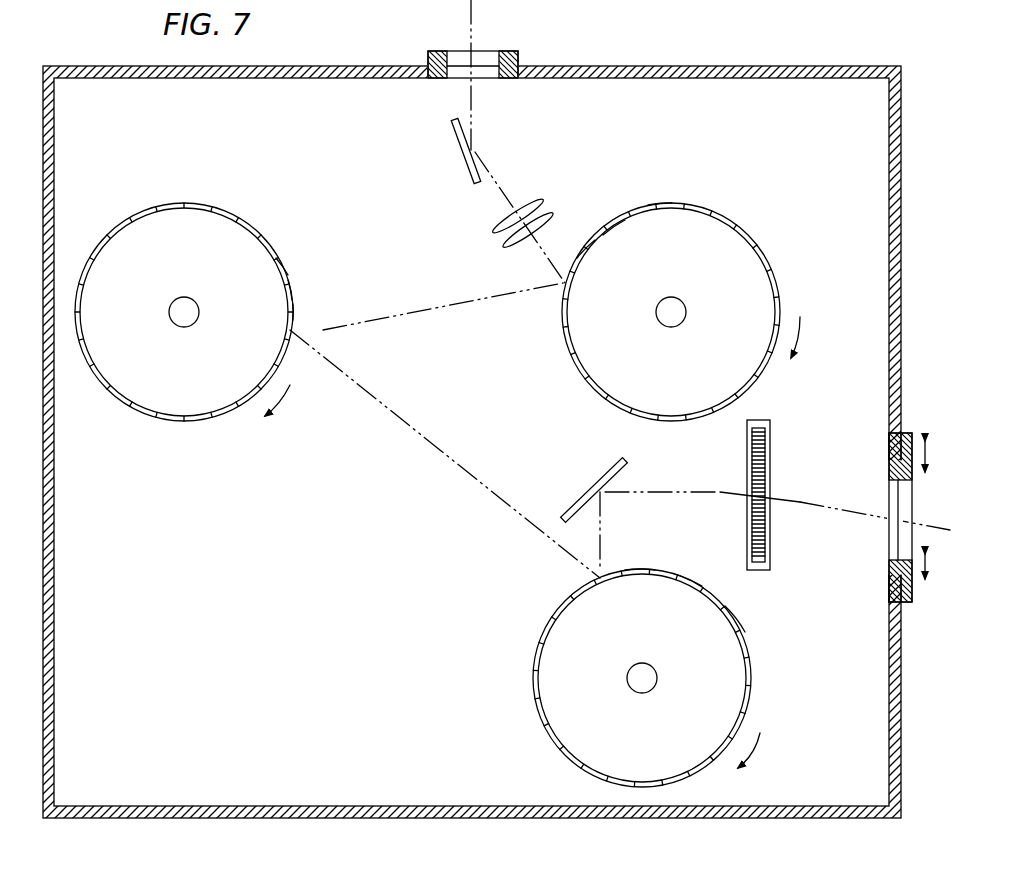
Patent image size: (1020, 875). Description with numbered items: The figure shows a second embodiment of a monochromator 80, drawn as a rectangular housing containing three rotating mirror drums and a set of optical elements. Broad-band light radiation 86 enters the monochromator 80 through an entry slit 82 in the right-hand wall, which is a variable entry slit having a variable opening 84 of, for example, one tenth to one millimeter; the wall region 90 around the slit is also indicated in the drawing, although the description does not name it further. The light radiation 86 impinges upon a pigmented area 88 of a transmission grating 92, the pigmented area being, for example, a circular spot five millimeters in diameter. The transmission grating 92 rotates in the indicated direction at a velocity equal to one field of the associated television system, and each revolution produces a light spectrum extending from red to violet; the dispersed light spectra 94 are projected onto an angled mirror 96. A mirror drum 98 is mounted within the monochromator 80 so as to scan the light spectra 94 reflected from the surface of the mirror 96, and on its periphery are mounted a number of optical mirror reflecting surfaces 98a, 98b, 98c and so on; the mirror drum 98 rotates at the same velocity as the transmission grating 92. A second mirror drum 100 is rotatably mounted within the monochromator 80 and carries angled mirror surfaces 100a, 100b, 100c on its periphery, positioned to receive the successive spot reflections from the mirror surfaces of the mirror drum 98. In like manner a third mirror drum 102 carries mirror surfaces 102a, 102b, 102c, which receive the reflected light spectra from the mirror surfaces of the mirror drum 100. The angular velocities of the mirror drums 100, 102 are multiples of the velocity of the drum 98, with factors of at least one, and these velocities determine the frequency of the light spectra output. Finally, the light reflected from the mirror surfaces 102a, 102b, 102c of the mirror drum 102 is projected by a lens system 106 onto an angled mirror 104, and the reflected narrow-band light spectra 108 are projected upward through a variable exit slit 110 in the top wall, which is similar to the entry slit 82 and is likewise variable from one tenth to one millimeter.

The monochromator 80 is at (222, 628).
The entry slit 82 is at (892, 517).
The variable opening 84 is at (890, 505).
The light radiation 86 is at (867, 515).
The pigmented area 88 is at (766, 492).
The slot in housing wall 90 is at (903, 433).
The transmission grating 92 is at (780, 489).
The light spectra 94 is at (690, 492).
The angled mirror 96 is at (603, 472).
The mirror drum 98 is at (722, 704).
The optical mirror reflecting surface 98a is at (640, 572).
The optical mirror reflecting surface 98b is at (690, 580).
The optical mirror reflecting surface 98c is at (740, 620).
The mirror drum 100 is at (240, 358).
The angled mirror surface 100a is at (288, 273).
The angled mirror surface 100b is at (292, 293).
The angled mirror surface 100c is at (293, 312).
The mirror drum 102 is at (617, 358).
The mirror surface 102a is at (660, 202).
The mirror surface 102b is at (615, 222).
The mirror surface 102c is at (587, 243).
The angled mirror 104 is at (455, 133).
The lens system 106 is at (532, 200).
The narrow-band light spectra 108 is at (472, 22).
The variable exit slit 110 is at (518, 58).